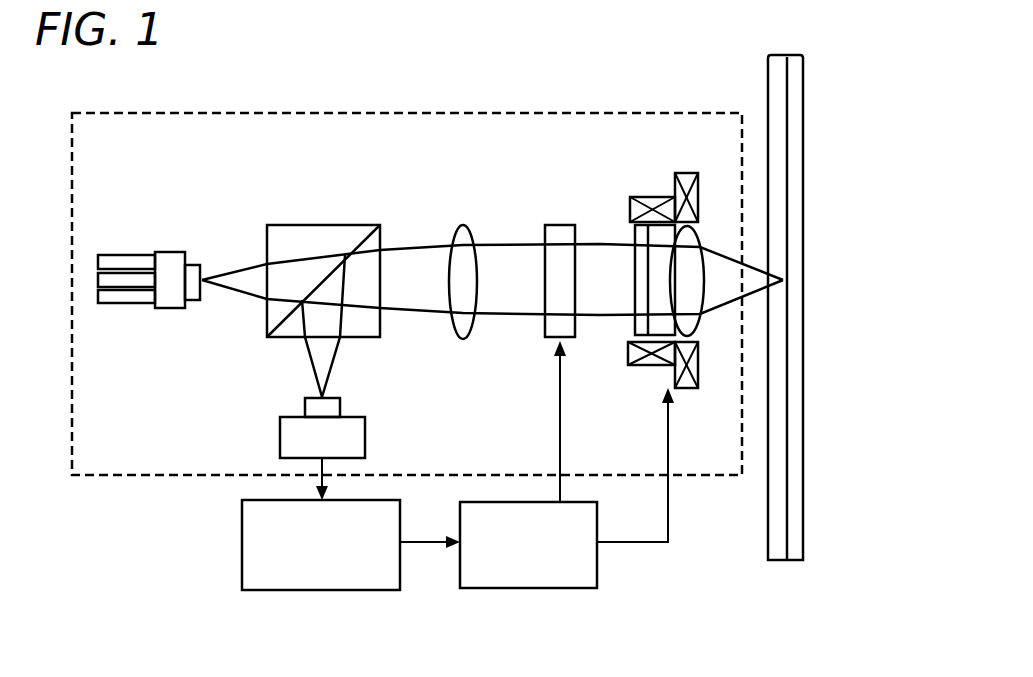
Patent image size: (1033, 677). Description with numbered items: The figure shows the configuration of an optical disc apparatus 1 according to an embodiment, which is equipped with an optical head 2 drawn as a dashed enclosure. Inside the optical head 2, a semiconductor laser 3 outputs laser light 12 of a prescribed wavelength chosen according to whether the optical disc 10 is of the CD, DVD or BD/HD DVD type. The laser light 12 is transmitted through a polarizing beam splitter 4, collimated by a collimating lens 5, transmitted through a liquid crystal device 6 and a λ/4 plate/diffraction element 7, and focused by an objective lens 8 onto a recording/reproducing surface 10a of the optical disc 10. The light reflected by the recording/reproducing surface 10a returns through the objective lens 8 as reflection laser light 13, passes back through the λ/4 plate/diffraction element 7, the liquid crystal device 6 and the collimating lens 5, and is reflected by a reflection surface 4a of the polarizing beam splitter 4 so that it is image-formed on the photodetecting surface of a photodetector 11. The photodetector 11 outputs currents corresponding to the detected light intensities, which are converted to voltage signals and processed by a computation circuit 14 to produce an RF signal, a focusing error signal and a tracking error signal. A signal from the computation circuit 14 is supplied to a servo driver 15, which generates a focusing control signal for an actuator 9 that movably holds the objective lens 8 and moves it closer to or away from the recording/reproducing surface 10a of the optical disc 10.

The optical disc apparatus 1 is at (627, 84).
The optical head 2 is at (400, 113).
The semiconductor laser 3 is at (166, 252).
The polarizing beam splitter 4 is at (305, 225).
The reflection surface 4a is at (380, 225).
The collimating lens 5 is at (463, 225).
The liquid crystal device 6 is at (556, 225).
The λ/4 plate/diffraction element 7 is at (635, 240).
The objective lens 8 is at (700, 232).
The actuator 9 is at (657, 367).
The optical disc 10 is at (803, 233).
The recording/reproducing surface 10a is at (790, 315).
The photodetector 11 is at (367, 442).
The laser light 12 is at (237, 272).
The reflection laser light 13 is at (333, 366).
The computation circuit 14 is at (322, 590).
The servo driver 15 is at (523, 588).